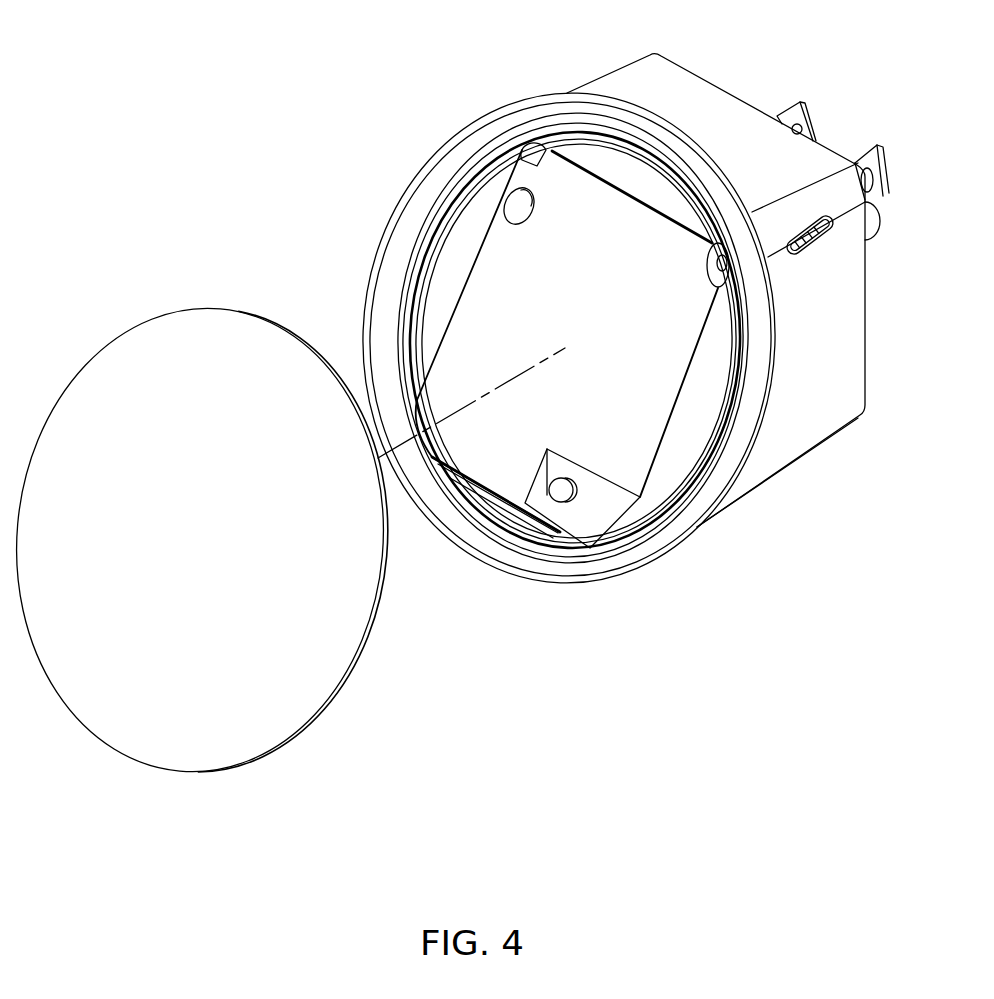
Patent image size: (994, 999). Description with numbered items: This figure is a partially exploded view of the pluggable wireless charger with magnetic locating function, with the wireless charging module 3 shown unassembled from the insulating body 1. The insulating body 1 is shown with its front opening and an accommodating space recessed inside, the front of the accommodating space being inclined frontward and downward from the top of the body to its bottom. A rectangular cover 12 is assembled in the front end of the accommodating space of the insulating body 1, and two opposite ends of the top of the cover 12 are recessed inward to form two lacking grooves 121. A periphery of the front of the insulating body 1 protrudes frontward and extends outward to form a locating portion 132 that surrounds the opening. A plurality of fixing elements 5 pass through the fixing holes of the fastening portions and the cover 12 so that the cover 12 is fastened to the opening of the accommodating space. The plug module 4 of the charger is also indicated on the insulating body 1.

The insulating body 1 is at (803, 430).
The wireless charging module 3 is at (176, 749).
The plug module 4 is at (647, 319).
The fixing element 5 is at (517, 198).
The cover 12 is at (495, 238).
The lacking groove 121 is at (529, 140).
The locating portion 132 is at (680, 530).